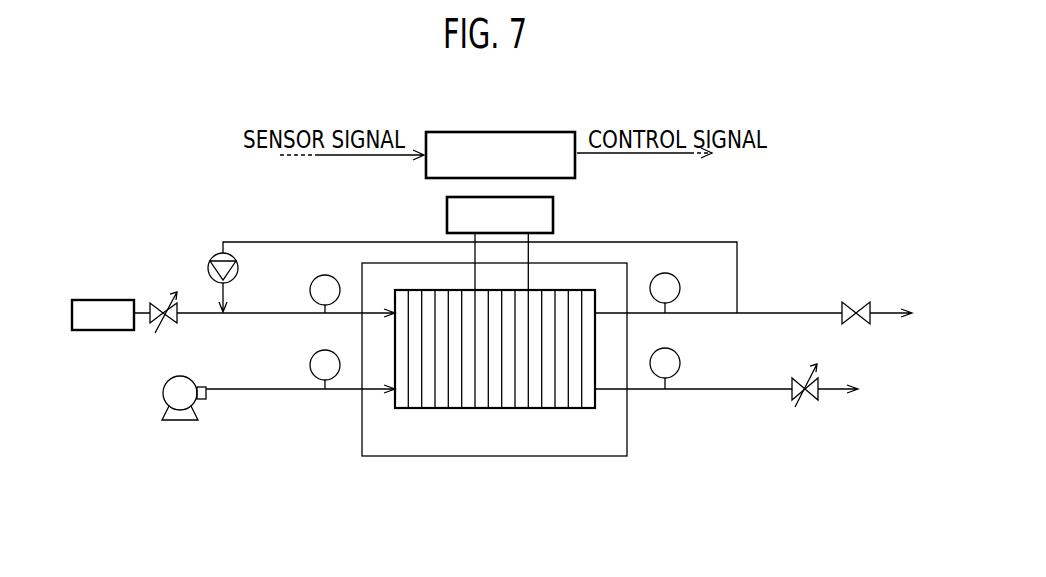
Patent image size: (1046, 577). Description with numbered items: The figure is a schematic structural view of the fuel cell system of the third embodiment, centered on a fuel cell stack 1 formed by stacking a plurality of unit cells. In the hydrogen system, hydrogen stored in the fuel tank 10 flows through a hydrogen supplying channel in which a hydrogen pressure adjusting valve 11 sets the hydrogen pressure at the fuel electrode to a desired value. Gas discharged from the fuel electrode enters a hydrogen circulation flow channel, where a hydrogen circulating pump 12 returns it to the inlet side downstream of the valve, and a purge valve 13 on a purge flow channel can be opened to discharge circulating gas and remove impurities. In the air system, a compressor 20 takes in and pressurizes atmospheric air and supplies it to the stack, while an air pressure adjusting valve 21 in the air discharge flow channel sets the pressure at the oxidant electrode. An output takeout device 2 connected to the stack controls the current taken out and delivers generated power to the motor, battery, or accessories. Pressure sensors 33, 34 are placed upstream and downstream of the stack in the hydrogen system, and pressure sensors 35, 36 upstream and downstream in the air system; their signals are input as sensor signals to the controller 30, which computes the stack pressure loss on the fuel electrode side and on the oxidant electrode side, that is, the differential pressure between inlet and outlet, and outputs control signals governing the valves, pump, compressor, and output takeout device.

The fuel cell stack 1 is at (490, 458).
The output takeout device 2 is at (556, 213).
The fuel tank 10 is at (110, 298).
The hydrogen pressure adjusting valve 11 is at (163, 301).
The hydrogen circulating pump 12 is at (240, 270).
The purge valve 13 is at (850, 301).
The compressor 20 is at (178, 422).
The air pressure adjusting valve 21 is at (808, 401).
The controller 30 is at (503, 131).
The pressure sensor 33 is at (308, 290).
The pressure sensor 34 is at (679, 281).
The pressure sensor 35 is at (308, 365).
The pressure sensor 36 is at (680, 360).